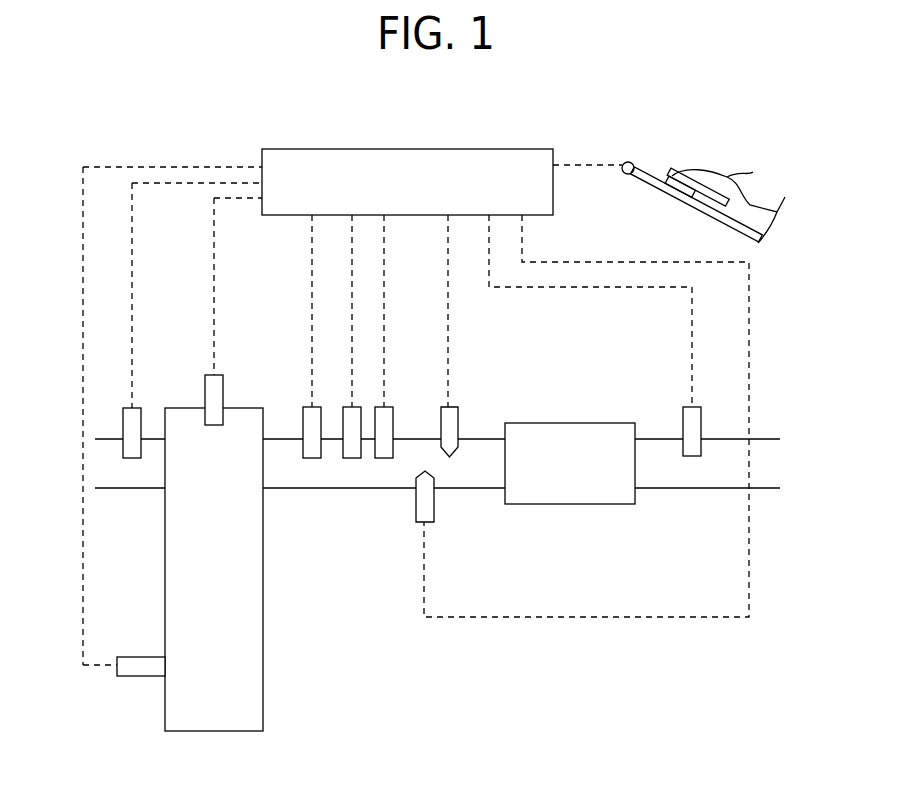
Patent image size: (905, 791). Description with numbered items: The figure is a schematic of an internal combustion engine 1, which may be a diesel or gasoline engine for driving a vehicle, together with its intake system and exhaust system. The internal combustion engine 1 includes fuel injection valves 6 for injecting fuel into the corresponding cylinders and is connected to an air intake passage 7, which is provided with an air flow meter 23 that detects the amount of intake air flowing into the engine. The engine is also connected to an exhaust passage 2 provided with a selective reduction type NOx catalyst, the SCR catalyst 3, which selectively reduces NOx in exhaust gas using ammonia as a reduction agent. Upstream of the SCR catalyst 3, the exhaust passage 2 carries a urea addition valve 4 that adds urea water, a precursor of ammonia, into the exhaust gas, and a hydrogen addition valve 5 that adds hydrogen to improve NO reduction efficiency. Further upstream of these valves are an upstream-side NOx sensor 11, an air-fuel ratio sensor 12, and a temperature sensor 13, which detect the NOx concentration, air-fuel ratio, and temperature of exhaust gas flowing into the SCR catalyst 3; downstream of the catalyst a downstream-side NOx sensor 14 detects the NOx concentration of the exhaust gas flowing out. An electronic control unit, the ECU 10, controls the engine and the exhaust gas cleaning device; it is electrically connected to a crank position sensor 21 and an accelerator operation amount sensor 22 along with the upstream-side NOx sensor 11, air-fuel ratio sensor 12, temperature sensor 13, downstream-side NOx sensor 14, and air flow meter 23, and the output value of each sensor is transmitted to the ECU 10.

The internal combustion engine 1 is at (265, 687).
The exhaust passage 2 is at (375, 490).
The selective reduction type NOx catalyst (SCR catalyst) 3 is at (570, 505).
The urea addition valve 4 is at (457, 410).
The hydrogen addition valve 5 is at (435, 513).
The fuel injection valve 6 is at (205, 393).
The air intake passage 7 is at (133, 493).
The electronic control unit (ECU) 10 is at (557, 150).
The upstream-side NOx sensor 11 is at (303, 418).
The air-fuel ratio sensor 12 is at (343, 455).
The temperature sensor 13 is at (393, 423).
The downstream-side NOx sensor 14 is at (683, 420).
The crank position sensor 21 is at (140, 657).
The accelerator operation amount sensor 22 is at (624, 172).
The air flow meter 23 is at (123, 424).